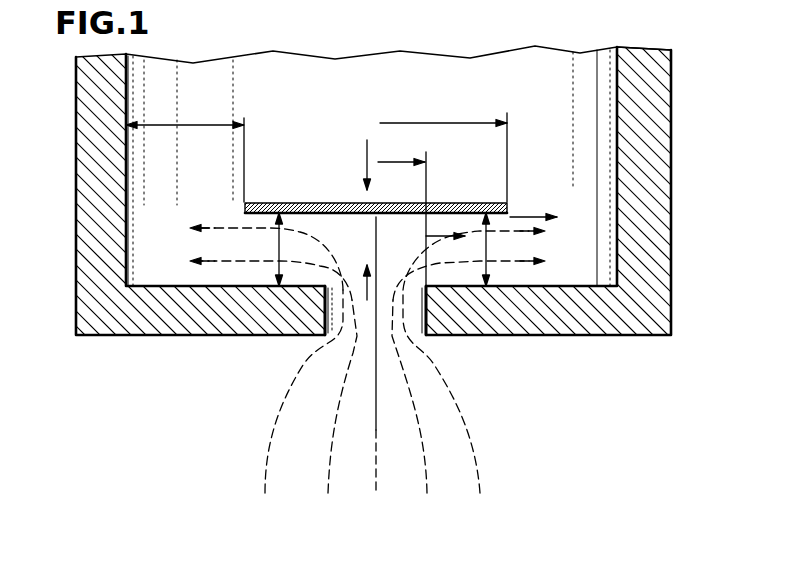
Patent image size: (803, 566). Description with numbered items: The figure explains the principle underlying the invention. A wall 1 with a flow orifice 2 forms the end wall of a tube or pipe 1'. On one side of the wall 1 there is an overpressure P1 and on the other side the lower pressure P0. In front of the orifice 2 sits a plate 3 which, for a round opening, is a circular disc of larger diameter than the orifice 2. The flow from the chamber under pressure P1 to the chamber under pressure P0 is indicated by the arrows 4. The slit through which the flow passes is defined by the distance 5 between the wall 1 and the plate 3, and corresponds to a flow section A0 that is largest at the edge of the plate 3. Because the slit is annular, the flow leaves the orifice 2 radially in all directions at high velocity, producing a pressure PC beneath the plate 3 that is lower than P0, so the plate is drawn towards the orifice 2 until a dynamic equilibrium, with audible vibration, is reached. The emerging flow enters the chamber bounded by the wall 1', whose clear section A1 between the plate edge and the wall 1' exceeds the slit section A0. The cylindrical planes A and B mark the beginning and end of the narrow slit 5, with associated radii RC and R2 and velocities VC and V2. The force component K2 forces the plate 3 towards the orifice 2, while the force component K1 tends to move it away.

The wall 1 is at (375, 283).
The tube or pipe 1' is at (664, 191).
The flow orifice 2 is at (343, 336).
The plate 3 is at (298, 202).
The arrows 4 is at (238, 230).
The distance 5 is at (497, 250).
The flow section A0 is at (281, 246).
The clear section A1 is at (195, 108).
The radius R2 is at (432, 122).
The cylindrical plane B is at (516, 157).
The radius RC is at (383, 162).
The cylindrical plane A is at (425, 208).
The force component K1 is at (354, 162).
The force component K2 is at (356, 268).
The pressure PC is at (389, 323).
The velocity VC is at (445, 225).
The velocity V2 is at (545, 221).
The lower pressure P0 is at (366, 247).
The overpressure P1 is at (372, 409).